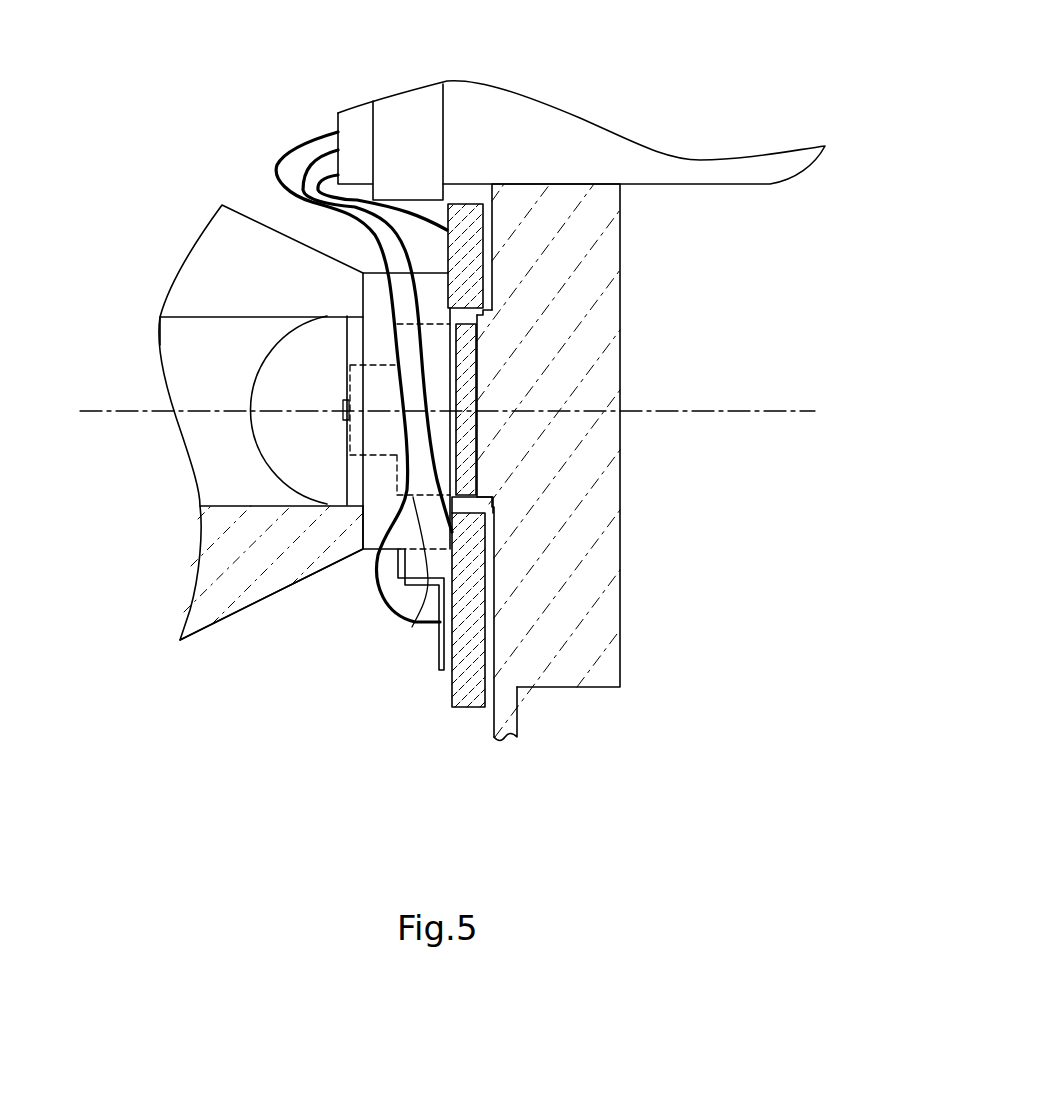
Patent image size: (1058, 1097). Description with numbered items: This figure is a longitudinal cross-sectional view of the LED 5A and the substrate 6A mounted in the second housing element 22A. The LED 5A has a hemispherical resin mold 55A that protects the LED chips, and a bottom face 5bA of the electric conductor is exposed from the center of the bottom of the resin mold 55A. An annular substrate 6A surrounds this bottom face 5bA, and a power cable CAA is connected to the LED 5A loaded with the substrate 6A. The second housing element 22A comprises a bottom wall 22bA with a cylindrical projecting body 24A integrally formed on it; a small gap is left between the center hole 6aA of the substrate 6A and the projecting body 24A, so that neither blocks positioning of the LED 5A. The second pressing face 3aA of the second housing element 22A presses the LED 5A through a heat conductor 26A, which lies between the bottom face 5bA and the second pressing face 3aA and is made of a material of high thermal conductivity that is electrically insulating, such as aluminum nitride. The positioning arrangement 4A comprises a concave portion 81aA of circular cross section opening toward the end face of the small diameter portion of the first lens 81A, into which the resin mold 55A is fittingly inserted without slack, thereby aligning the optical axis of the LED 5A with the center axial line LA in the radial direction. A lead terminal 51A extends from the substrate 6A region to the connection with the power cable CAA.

The power cable CAA is at (577, 114).
The LED 5A is at (278, 320).
The positioning arrangement 4A is at (325, 512).
The resin mold 55A is at (262, 362).
The concave portion 81aA is at (222, 505).
The first lens 81A is at (242, 612).
The second pressing face 3aA is at (455, 390).
The projecting body 24A is at (484, 311).
The bottom face 5bA is at (460, 438).
The heat conductor 26A is at (470, 372).
The second housing element 22A is at (622, 656).
The bottom wall 22bA is at (494, 723).
The substrate 6A is at (450, 692).
The center hole 6aA is at (477, 507).
The lead terminal 51A is at (413, 620).
The center axial line LA is at (468, 415).